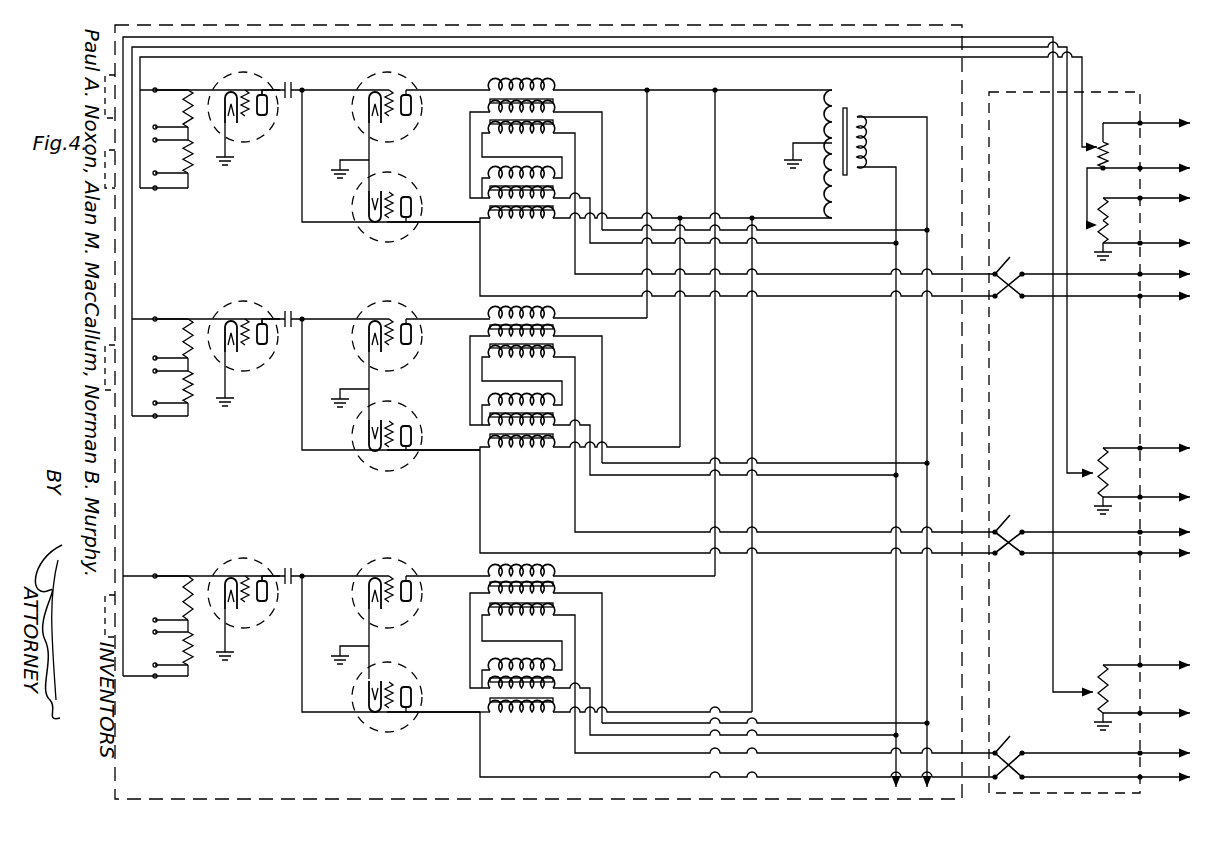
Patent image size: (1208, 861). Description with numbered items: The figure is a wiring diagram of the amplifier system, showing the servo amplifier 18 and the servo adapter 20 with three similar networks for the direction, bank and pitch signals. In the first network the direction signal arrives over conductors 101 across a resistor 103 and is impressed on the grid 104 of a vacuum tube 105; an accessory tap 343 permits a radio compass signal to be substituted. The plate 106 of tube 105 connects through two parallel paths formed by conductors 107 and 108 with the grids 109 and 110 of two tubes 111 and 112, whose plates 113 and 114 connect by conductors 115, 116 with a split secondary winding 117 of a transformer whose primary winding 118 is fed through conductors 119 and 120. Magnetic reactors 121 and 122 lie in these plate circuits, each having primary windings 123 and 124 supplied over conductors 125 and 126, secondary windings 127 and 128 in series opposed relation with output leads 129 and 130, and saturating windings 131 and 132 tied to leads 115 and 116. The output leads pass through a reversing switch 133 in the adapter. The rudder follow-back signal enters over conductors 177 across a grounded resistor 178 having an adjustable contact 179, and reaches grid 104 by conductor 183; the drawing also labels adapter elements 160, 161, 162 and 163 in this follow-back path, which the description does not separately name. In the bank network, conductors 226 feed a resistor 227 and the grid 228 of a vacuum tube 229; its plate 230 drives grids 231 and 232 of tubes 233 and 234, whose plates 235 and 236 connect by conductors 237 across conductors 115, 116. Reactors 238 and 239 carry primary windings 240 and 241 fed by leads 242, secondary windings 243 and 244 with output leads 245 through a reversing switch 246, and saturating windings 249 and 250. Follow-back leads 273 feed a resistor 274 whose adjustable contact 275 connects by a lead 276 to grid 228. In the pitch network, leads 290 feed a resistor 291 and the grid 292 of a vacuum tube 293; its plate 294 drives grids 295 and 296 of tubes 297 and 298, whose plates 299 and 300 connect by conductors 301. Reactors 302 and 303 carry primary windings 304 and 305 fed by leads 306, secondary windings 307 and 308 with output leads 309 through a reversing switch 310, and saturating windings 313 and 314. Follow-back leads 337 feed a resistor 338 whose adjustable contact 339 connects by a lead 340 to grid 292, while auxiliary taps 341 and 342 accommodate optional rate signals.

The servo amplifier 18 is at (113, 252).
The servo adapter 20 is at (992, 412).
The conductors 101 is at (167, 156).
The resistor 103 is at (193, 180).
The grid 104 is at (232, 140).
The vacuum tube 105 is at (218, 90).
The plate 106 is at (270, 97).
The conductor 107 is at (322, 90).
The conductor 108 is at (308, 160).
The grid 109 is at (388, 157).
The grid 110 is at (402, 178).
The tube 111 is at (386, 98).
The tube 112 is at (378, 241).
The plate 113 is at (412, 96).
The plate 114 is at (410, 224).
The conductor 115 is at (615, 90).
The conductor 116 is at (612, 216).
The split secondary winding 117 is at (824, 130).
The primary winding 118 is at (866, 142).
The conductor 119 is at (895, 348).
The conductor 120 is at (926, 378).
The magnetic reactor 121 is at (498, 105).
The magnetic reactor 122 is at (498, 205).
The primary winding 123 is at (556, 112).
The primary winding 124 is at (490, 197).
The conductor 125 is at (803, 244).
The conductor 126 is at (840, 245).
The secondary winding 127 is at (522, 149).
The secondary winding 128 is at (518, 175).
The output lead 129 is at (575, 268).
The output lead 130 is at (560, 295).
The saturating winding 131 is at (533, 87).
The saturating winding 132 is at (540, 227).
The reversing switch 133 is at (1004, 256).
The conductor 160 is at (1086, 190).
The potentiometer 161 is at (1114, 147).
The movable contact 162 is at (1096, 138).
The conductor 163 is at (144, 192).
The conductors 177 is at (1160, 202).
The resistor 178 is at (1108, 232).
The adjustable contact 179 is at (1106, 210).
The conductor 183 is at (980, 60).
The conductors 226 is at (167, 387).
The resistor 227 is at (192, 418).
The grid 228 is at (238, 360).
The vacuum tube 229 is at (241, 301).
The plate 230 is at (272, 322).
The grid 231 is at (382, 380).
The grid 232 is at (405, 430).
The tube 233 is at (387, 319).
The tube 234 is at (362, 470).
The plate 235 is at (412, 325).
The plate 236 is at (410, 466).
The conductors 237 is at (625, 372).
The magnetic reactor 238 is at (498, 331).
The magnetic reactor 239 is at (498, 431).
The primary winding 240 is at (556, 336).
The primary winding 241 is at (560, 426).
The leads 242 is at (660, 477).
The secondary winding 243 is at (521, 362).
The secondary winding 244 is at (521, 392).
The output leads 245 is at (627, 531).
The reversing switch 246 is at (1008, 518).
The saturating winding 249 is at (525, 317).
The saturating winding 250 is at (540, 456).
The leads 273 is at (1158, 452).
The resistor 274 is at (1107, 456).
The adjustable contact 275 is at (1100, 492).
The lead 276 is at (135, 420).
The leads 290 is at (165, 648).
The resistor 291 is at (191, 678).
The grid 292 is at (238, 620).
The vacuum tube 293 is at (241, 559).
The plate 294 is at (272, 579).
The grid 295 is at (349, 623).
The grid 296 is at (405, 688).
The tube 297 is at (385, 559).
The tube 298 is at (370, 730).
The plate 299 is at (412, 582).
The plate 300 is at (410, 714).
The conductors 301 is at (655, 579).
The magnetic reactor 302 is at (498, 591).
The magnetic reactor 303 is at (498, 694).
The primary winding 304 is at (556, 594).
The primary winding 305 is at (556, 690).
The leads 306 is at (678, 736).
The secondary winding 307 is at (522, 636).
The secondary winding 308 is at (518, 665).
The output leads 309 is at (632, 779).
The reversing switch 310 is at (1008, 752).
The saturating winding 313 is at (538, 574).
The saturating winding 314 is at (540, 721).
The leads 337 is at (1160, 670).
The resistor 338 is at (1106, 672).
The adjustable contact 339 is at (1098, 719).
The lead 340 is at (128, 692).
The auxiliary tap 341 is at (167, 338).
The auxiliary tap 342 is at (167, 598).
The accessory tap 343 is at (167, 108).